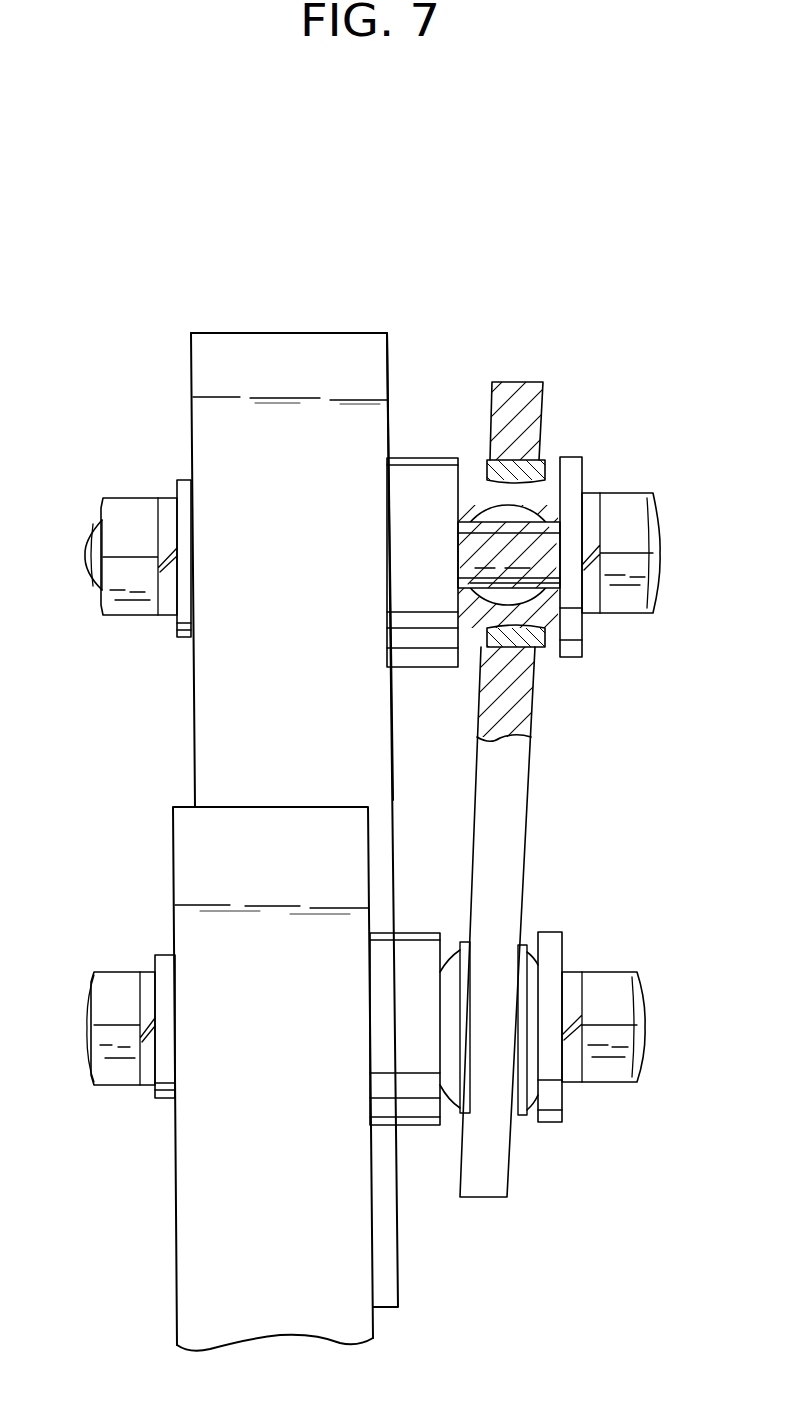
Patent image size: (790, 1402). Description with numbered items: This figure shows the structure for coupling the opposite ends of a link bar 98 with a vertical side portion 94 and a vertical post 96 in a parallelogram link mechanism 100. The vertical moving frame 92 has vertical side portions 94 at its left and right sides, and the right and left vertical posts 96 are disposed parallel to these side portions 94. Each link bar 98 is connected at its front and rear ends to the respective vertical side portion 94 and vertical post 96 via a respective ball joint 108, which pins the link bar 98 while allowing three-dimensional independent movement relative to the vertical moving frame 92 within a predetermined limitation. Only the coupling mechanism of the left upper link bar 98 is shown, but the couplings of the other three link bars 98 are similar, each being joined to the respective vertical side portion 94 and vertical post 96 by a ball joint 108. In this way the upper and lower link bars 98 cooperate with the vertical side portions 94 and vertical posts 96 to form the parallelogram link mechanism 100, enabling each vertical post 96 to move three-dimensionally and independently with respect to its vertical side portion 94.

The vertical moving frame 92 is at (280, 330).
The vertical side portion 94 is at (368, 358).
The vertical post 96 is at (185, 838).
The link bar 98 is at (505, 820).
The parallelogram link mechanism 100 is at (535, 280).
The ball joint 108 is at (543, 500).